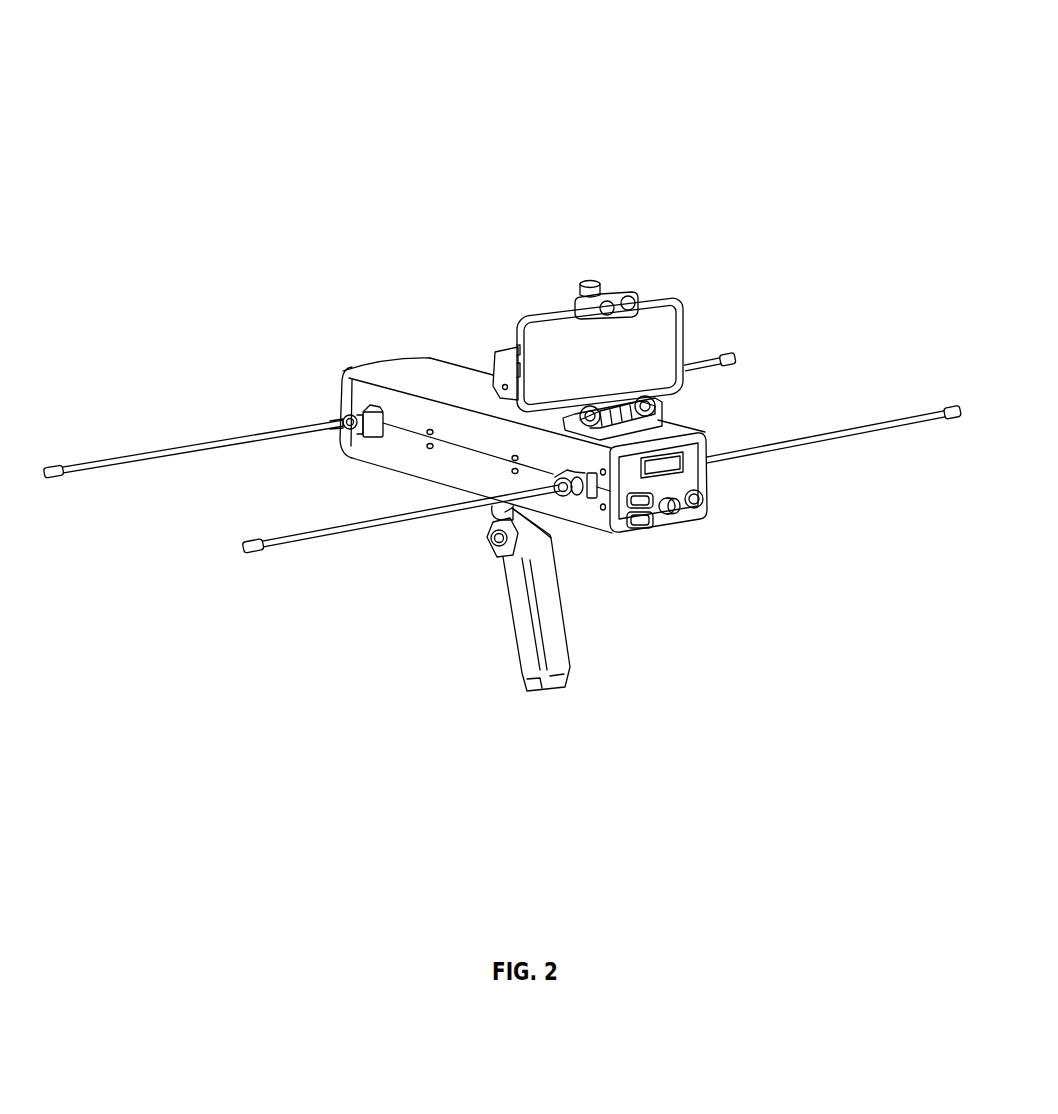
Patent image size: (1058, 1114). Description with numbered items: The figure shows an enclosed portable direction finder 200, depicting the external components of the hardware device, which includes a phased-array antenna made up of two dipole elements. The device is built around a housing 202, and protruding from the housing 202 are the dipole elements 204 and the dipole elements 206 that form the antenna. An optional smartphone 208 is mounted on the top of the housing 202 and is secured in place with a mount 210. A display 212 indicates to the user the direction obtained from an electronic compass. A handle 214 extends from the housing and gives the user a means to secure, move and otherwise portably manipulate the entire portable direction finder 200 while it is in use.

The portable direction finder 200 is at (853, 68).
The housing 202 is at (435, 383).
The dipole elements 204 is at (50, 478).
The dipole elements 206 is at (909, 416).
The smartphone 208 is at (662, 335).
The mount 210 is at (627, 300).
The display 212 is at (652, 517).
The handle 214 is at (520, 608).